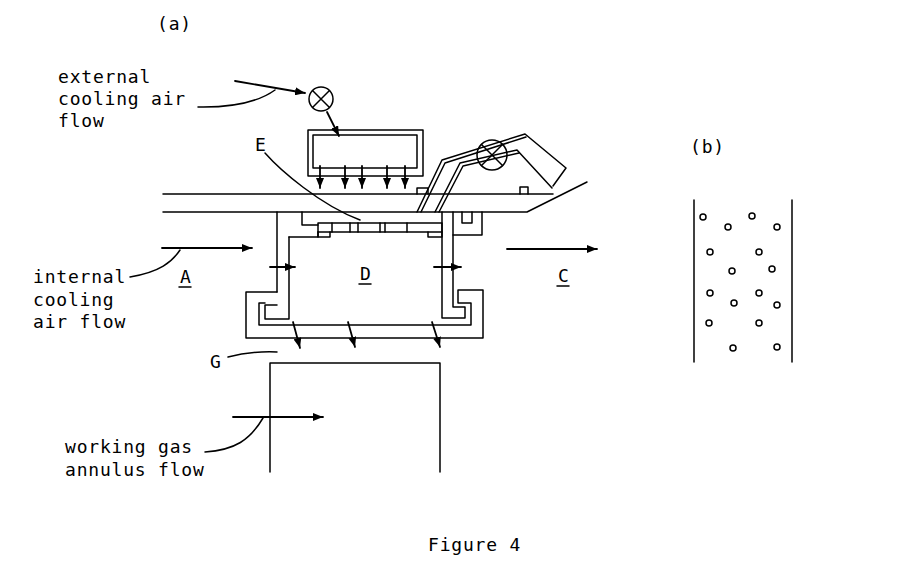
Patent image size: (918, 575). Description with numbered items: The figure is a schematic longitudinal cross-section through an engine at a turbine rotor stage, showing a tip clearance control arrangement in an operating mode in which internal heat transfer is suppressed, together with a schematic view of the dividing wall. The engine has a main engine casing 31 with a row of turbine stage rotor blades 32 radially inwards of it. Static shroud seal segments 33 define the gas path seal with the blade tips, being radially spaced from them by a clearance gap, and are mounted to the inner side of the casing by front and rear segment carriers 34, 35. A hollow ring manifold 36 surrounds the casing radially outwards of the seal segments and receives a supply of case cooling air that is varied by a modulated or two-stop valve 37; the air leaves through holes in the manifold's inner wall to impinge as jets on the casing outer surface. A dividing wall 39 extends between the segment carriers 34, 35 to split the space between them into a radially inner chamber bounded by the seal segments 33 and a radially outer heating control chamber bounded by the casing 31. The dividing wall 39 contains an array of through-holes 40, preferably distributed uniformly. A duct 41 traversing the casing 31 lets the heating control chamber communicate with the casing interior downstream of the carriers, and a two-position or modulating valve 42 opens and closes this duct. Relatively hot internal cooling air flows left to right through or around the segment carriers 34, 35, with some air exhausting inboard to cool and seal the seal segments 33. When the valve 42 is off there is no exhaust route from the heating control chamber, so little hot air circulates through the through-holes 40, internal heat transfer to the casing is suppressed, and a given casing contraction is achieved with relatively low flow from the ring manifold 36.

The main engine casing 31 is at (230, 202).
The turbine stage rotor blades 32 is at (375, 463).
The static shroud seal segments 33 is at (455, 340).
The front segment carrier 34 is at (278, 293).
The rear segment carrier 35 is at (450, 292).
The hollow ring manifold 36 is at (377, 131).
The modulated or two-stop valve 37 is at (320, 86).
The dividing wall 39 is at (347, 227).
The through-holes 40 is at (775, 270).
The duct 41 is at (446, 170).
The 2-position off/on or modulating valve 42 is at (492, 140).